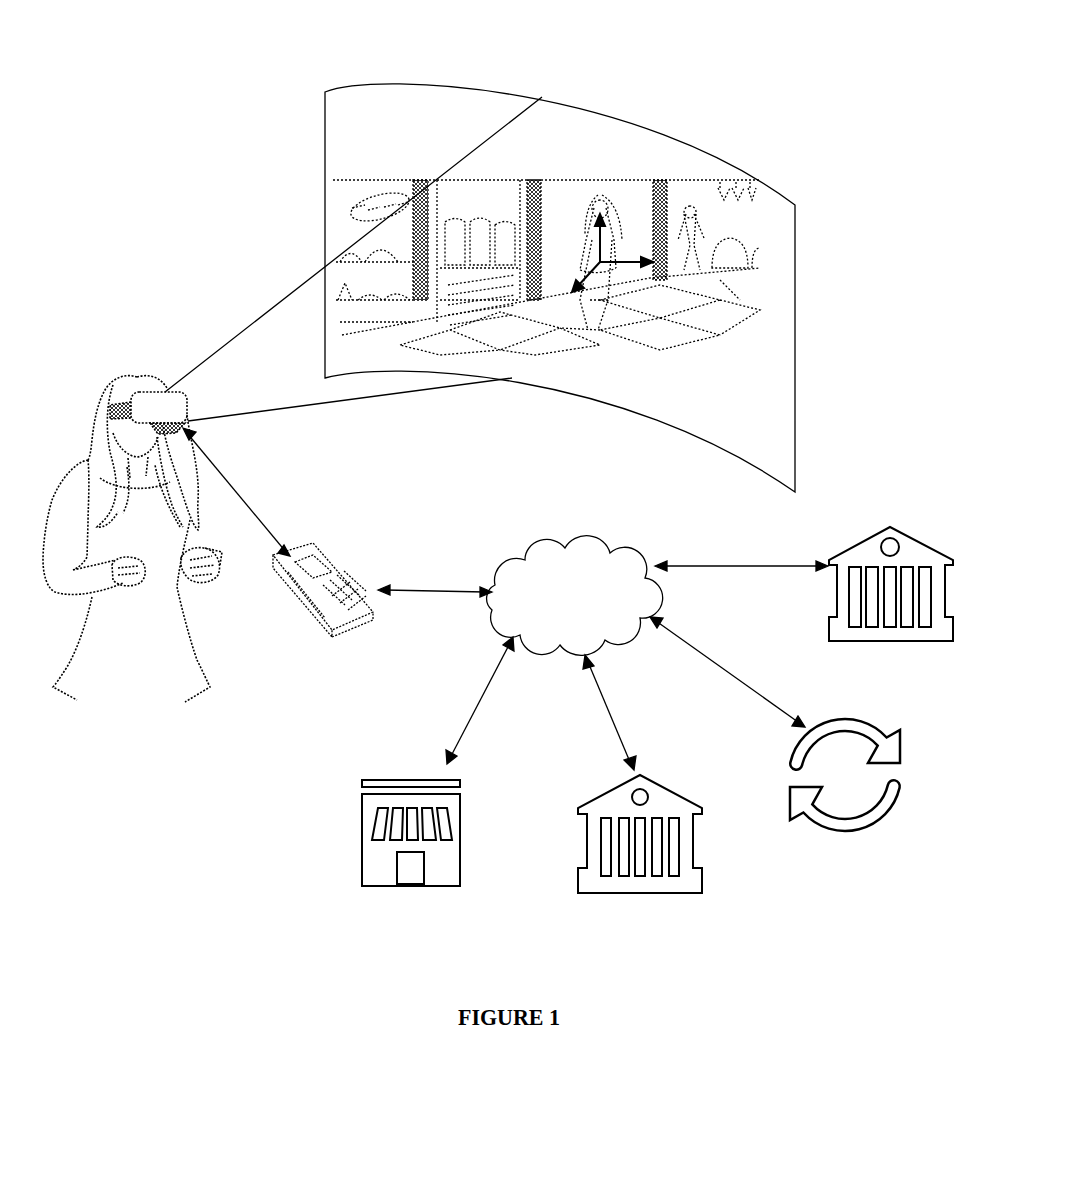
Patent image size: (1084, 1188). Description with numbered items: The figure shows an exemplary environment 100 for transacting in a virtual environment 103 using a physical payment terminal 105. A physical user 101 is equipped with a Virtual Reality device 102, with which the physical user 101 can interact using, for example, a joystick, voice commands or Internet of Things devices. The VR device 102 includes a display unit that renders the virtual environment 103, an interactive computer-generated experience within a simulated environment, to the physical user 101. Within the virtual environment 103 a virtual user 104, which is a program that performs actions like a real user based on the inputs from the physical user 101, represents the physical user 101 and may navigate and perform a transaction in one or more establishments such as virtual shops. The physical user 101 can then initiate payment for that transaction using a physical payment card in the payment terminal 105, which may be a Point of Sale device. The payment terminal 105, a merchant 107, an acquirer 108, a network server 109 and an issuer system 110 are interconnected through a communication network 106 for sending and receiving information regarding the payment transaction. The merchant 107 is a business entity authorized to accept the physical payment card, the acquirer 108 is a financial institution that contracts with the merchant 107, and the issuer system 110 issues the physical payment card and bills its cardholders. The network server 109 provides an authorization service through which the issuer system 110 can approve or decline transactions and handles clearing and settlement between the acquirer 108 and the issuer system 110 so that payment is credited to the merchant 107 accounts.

The environment 100 is at (536, 45).
The physical user 101 is at (194, 650).
The Virtual Reality (VR) device 102 is at (188, 398).
The virtual environment 103 is at (796, 205).
The virtual user 104 is at (606, 200).
The physical payment terminal 105 is at (342, 567).
The communication network 106 is at (590, 541).
The merchant 107 is at (456, 823).
The acquirer 108 is at (696, 860).
The network server 109 is at (903, 736).
The issuer system 110 is at (922, 546).